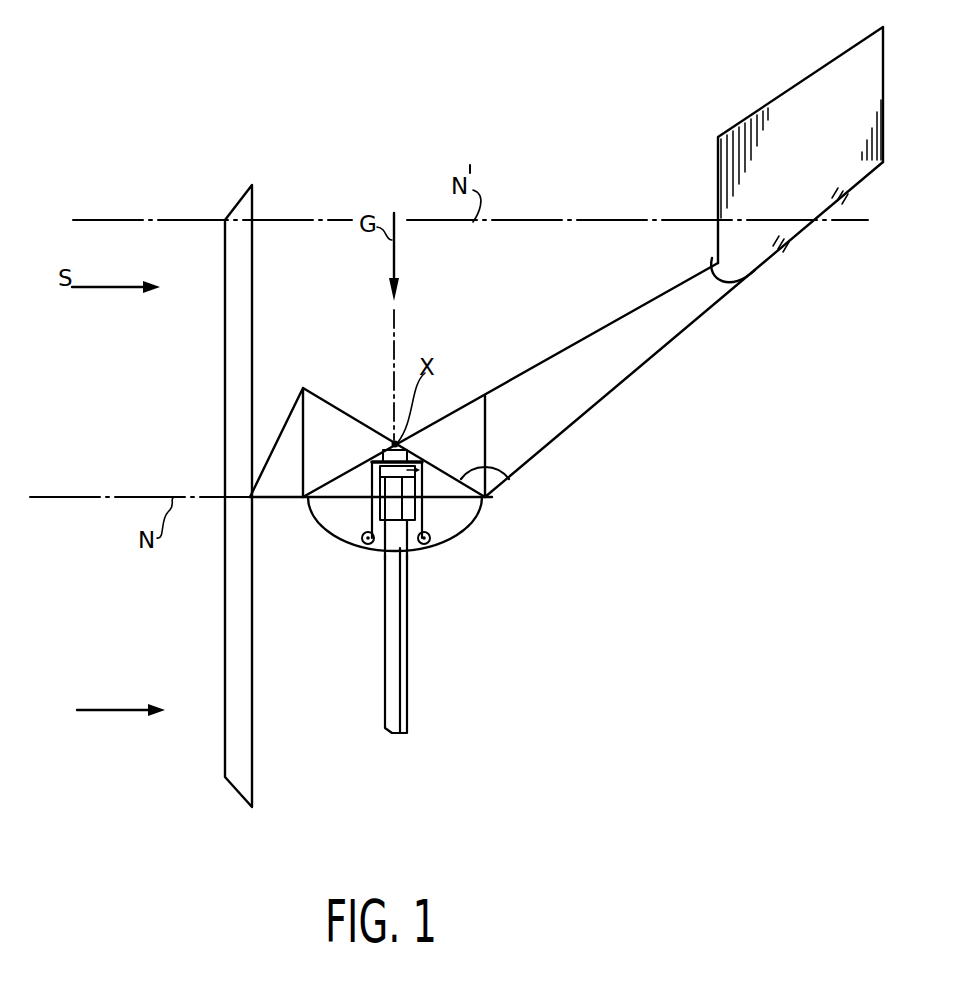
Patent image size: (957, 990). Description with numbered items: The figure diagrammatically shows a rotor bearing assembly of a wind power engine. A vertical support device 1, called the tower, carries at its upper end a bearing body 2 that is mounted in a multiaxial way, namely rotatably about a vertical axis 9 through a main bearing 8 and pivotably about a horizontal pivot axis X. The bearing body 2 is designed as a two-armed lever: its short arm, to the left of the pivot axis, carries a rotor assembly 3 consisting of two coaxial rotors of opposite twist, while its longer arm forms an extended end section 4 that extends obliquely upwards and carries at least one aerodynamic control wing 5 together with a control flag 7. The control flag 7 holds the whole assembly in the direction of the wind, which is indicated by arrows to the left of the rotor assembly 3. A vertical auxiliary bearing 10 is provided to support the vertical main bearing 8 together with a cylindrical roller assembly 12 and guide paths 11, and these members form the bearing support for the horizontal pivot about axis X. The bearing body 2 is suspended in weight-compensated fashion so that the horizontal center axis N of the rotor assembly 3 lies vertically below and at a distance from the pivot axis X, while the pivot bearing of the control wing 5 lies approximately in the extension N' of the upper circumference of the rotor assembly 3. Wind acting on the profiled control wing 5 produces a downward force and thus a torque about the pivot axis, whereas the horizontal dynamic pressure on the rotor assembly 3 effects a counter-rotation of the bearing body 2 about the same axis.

The vertical support device 1 is at (402, 697).
The bearing body 2 is at (508, 480).
The rotor assembly 3 is at (240, 212).
The end section 4 is at (610, 395).
The aerodynamic control wing 5 is at (798, 230).
The control flag 7 is at (765, 106).
The main bearing 8 is at (422, 468).
The vertical axis 9 is at (392, 326).
The vertical auxiliary bearing 10 is at (415, 553).
The guide paths 11 is at (340, 538).
The cylindrical roller assembly 12 is at (362, 540).